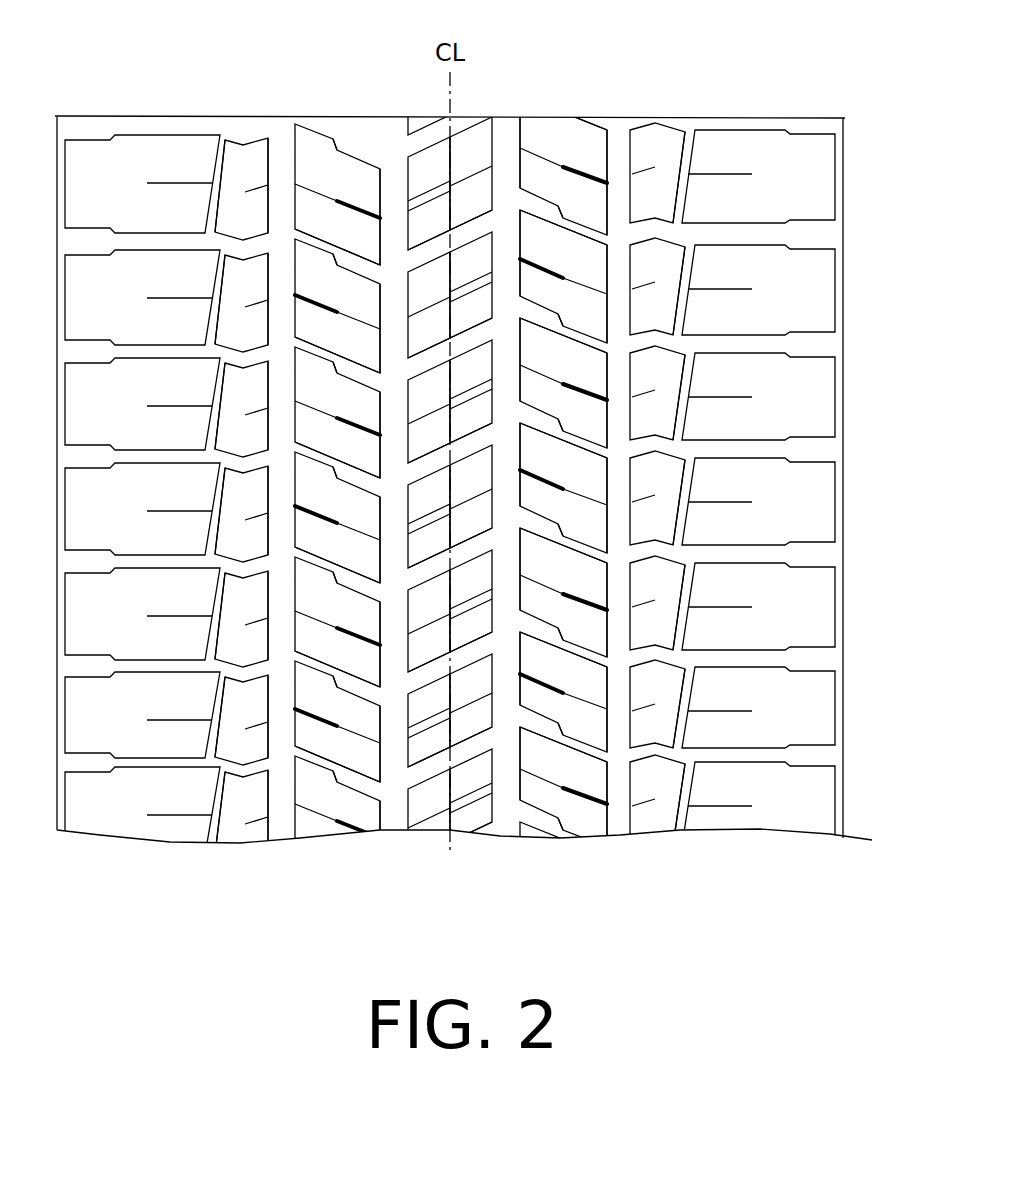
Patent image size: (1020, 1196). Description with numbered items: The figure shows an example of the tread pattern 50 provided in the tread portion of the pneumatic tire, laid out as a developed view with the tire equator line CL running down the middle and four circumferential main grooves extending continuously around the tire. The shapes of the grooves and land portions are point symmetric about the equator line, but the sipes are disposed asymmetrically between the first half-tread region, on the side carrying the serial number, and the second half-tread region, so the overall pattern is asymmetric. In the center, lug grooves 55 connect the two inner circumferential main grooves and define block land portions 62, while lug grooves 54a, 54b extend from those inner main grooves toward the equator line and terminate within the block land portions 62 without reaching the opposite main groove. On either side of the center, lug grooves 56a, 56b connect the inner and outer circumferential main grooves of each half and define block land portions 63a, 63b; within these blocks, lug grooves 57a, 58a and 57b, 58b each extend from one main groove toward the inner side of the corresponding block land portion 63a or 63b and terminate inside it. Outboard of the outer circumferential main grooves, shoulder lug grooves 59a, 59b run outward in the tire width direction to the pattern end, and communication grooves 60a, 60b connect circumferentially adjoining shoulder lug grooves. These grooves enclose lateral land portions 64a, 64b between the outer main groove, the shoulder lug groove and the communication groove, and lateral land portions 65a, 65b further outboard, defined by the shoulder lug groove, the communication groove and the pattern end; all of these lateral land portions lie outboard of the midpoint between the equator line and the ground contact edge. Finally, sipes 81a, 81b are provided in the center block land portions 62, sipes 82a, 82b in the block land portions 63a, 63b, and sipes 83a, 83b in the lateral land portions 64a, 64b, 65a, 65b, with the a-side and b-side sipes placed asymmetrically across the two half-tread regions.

The tread pattern 50 is at (818, 68).
The lug groove 54a is at (471, 479).
The lug groove 54b is at (429, 442).
The lug groove 55 is at (450, 536).
The lug groove 56a is at (563, 428).
The lug groove 56b is at (337, 553).
The lug groove 57a is at (563, 468).
The lug groove 57b is at (337, 502).
The lug groove 58a is at (563, 518).
The lug groove 58b is at (337, 500).
The shoulder lug groove 59a is at (732, 484).
The shoulder lug groove 59b is at (166, 498).
The communication groove 60a is at (657, 484).
The communication groove 60b is at (241, 500).
The block land portion 62 is at (442, 835).
The block land portion 63a is at (560, 518).
The block land portion 63b is at (335, 460).
The lateral land portion 64a is at (679, 488).
The lateral land portion 64b is at (220, 497).
The lateral land portion 65a is at (758, 487).
The lateral land portion 65b is at (142, 495).
The sipe 81a is at (471, 489).
The sipe 81b is at (429, 504).
The sipe 82a is at (563, 485).
The sipe 82b is at (337, 519).
The sipe 83a is at (692, 486).
The sipe 83b is at (207, 503).